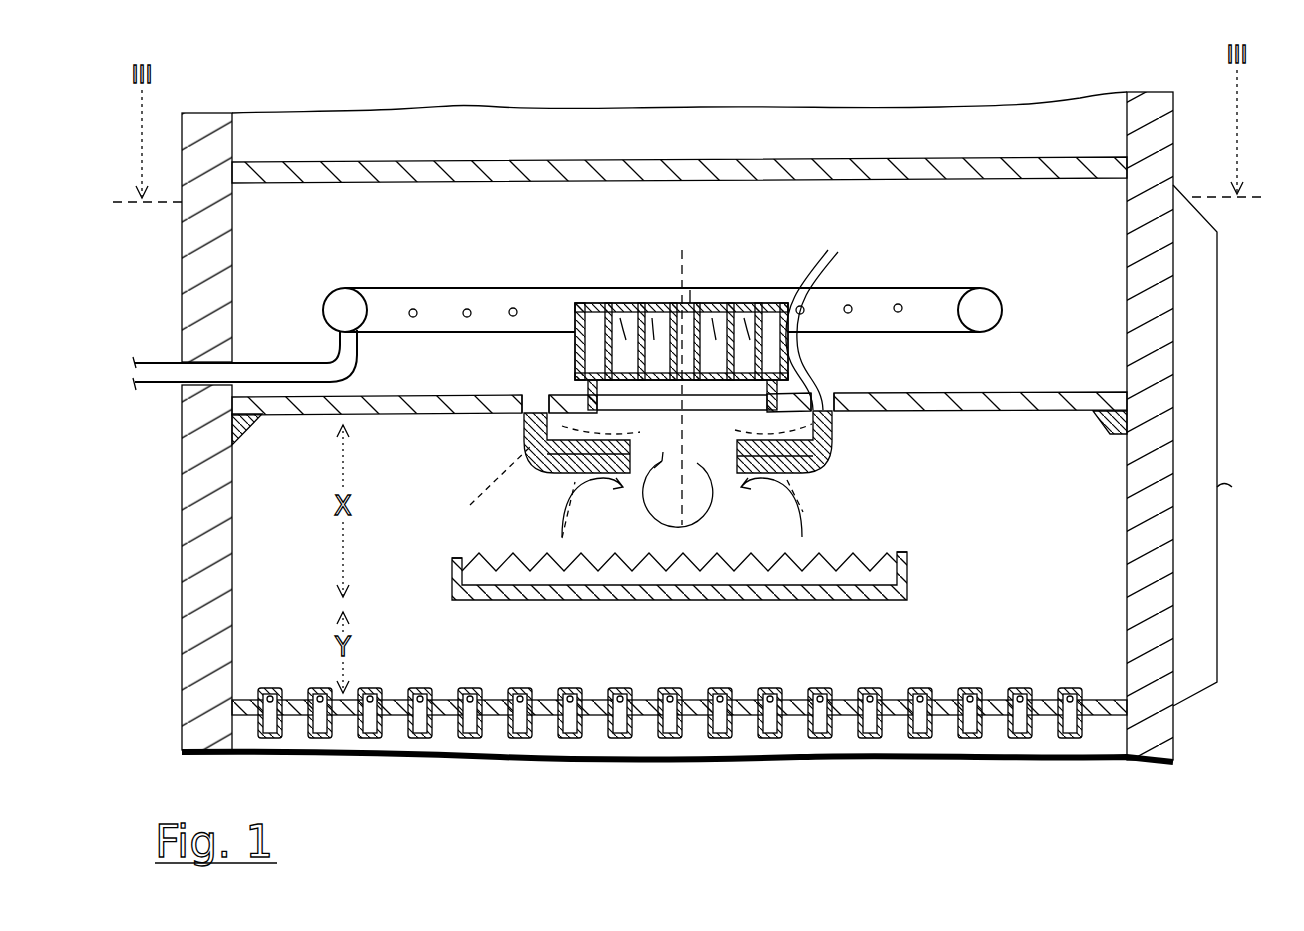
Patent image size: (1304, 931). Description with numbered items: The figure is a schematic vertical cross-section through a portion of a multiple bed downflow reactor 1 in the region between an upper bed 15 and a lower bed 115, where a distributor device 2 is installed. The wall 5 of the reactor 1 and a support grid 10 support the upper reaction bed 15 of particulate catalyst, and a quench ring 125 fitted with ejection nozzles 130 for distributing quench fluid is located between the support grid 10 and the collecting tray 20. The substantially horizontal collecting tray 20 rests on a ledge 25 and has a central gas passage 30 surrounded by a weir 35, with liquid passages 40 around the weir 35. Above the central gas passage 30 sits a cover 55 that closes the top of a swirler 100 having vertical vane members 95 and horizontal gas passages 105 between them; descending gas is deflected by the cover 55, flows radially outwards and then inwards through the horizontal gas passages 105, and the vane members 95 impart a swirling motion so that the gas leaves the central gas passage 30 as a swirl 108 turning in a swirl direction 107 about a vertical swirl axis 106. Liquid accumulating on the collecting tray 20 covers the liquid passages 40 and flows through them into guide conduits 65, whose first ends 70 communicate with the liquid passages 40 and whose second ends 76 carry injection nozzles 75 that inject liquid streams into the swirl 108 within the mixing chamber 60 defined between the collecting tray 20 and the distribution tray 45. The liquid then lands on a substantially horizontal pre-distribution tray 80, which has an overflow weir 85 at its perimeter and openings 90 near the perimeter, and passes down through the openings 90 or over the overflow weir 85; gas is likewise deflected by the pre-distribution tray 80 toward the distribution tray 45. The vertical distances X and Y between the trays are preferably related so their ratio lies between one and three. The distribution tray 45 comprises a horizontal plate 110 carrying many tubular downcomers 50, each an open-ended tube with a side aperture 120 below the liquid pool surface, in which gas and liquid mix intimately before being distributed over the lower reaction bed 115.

The reactor 1 is at (1186, 168).
The distributor device 2 is at (1232, 487).
The wall 5 is at (206, 300).
The support grid 10 is at (992, 176).
The upper bed 15 is at (585, 128).
The collecting tray 20 is at (1013, 414).
The ledge 25 is at (252, 434).
The central gas passage 30 is at (815, 396).
The weir 35 is at (805, 378).
The liquid passages 40 is at (540, 403).
The distribution tray 45 is at (692, 752).
The tubular downcomers 50 is at (915, 736).
The cover 55 is at (690, 290).
The mixing chamber 60 is at (258, 628).
The guide conduits 65 is at (542, 470).
The first ends 70 is at (512, 422).
The injection nozzle 75 is at (682, 507).
The second ends 76 is at (562, 530).
The pre-distribution tray 80 is at (903, 558).
The overflow weir 85 is at (452, 590).
The openings 90 is at (475, 602).
The vane members 95 is at (832, 317).
The swirler 100 is at (558, 331).
The horizontal gas passages 105 is at (588, 303).
The vertical swirl axis 106 is at (680, 262).
The swirl direction 107 is at (700, 512).
The swirl 108 is at (475, 490).
The plate 110 is at (500, 720).
The lower bed 115 is at (752, 803).
The aperture 120 is at (668, 690).
The quench ring 125 is at (988, 305).
The ejection nozzles 130 is at (464, 311).